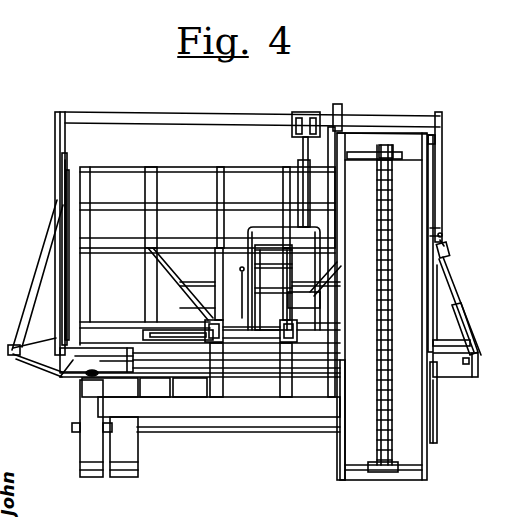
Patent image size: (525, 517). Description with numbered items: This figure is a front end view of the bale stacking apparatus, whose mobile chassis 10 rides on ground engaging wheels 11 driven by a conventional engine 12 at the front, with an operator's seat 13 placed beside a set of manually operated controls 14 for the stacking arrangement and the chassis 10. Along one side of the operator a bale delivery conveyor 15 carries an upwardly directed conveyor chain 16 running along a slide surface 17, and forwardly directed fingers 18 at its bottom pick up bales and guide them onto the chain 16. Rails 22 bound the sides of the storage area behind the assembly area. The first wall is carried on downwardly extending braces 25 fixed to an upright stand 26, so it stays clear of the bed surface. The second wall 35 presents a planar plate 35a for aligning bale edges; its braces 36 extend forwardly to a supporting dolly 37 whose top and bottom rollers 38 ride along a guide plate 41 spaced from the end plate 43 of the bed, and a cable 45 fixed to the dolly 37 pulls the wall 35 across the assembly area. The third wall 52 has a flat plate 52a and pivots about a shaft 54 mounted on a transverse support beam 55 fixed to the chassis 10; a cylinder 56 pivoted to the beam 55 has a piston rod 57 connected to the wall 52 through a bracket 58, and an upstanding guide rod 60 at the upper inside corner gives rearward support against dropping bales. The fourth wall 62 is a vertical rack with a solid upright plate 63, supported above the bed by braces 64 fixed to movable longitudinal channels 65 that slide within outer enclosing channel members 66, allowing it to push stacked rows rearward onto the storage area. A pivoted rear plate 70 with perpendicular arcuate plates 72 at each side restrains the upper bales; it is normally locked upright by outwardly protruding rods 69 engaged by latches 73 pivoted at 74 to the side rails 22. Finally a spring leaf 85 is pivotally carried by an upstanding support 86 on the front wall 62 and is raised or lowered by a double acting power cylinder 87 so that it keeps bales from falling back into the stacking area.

The mobile chassis 10 is at (170, 416).
The ground engaging wheels 11 is at (85, 445).
The engine 12 is at (237, 392).
The seat 13 is at (310, 307).
The manually operated controls 14 is at (280, 265).
The bale delivery conveyor 15 is at (322, 420).
The conveyor chain 16 is at (390, 224).
The slide surface 17 is at (368, 340).
The forwardly directed fingers 18 is at (362, 478).
The rails 22 is at (70, 174).
The braces 25 is at (448, 297).
The upright stand 26 is at (445, 360).
The second wall 35 is at (57, 179).
The planar plate 35a is at (64, 200).
The braces 36 is at (34, 342).
The supporting dolly 37 is at (62, 372).
The top and bottom rollers 38 is at (121, 350).
The guide plate 41 is at (202, 371).
The end plate 43 is at (180, 370).
The cable 45 is at (126, 387).
The third wall 52 is at (365, 130).
The flat plate 52a is at (412, 143).
The shaft 54 is at (456, 343).
The transverse support beam 55 is at (466, 370).
The cylinder 56 is at (460, 318).
The piston rod 57 is at (452, 276).
The bracket 58 is at (447, 246).
The guide rod 60 is at (341, 106).
The fourth wall 62 is at (210, 239).
The upright plate 63 is at (262, 334).
The braces 64 is at (222, 262).
The longitudinal channels 65 is at (256, 295).
The outer enclosing channel members 66 is at (283, 330).
The outwardly protruding rods 69 is at (446, 244).
The rear plate 70 is at (170, 159).
The arcuate plates 72 is at (57, 134).
The latches 73 is at (442, 231).
The pivot 74 is at (436, 233).
The spring leaf 85 is at (298, 113).
The upstanding support 86 is at (302, 151).
The double acting power cylinder 87 is at (298, 166).